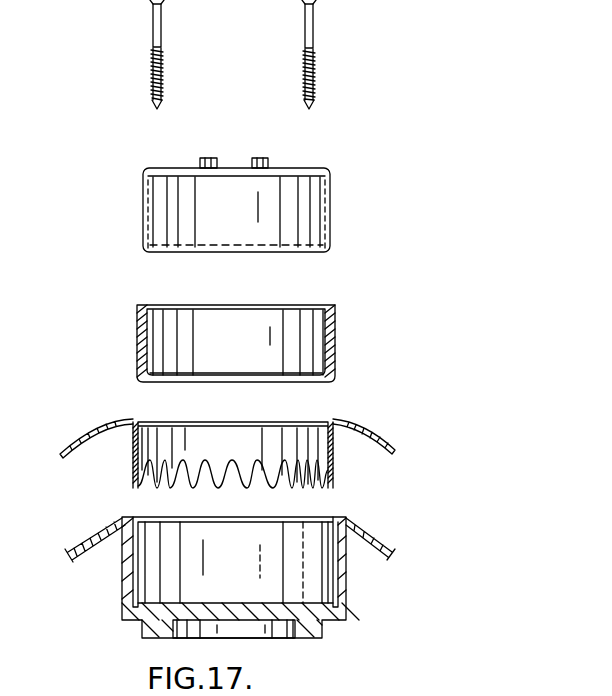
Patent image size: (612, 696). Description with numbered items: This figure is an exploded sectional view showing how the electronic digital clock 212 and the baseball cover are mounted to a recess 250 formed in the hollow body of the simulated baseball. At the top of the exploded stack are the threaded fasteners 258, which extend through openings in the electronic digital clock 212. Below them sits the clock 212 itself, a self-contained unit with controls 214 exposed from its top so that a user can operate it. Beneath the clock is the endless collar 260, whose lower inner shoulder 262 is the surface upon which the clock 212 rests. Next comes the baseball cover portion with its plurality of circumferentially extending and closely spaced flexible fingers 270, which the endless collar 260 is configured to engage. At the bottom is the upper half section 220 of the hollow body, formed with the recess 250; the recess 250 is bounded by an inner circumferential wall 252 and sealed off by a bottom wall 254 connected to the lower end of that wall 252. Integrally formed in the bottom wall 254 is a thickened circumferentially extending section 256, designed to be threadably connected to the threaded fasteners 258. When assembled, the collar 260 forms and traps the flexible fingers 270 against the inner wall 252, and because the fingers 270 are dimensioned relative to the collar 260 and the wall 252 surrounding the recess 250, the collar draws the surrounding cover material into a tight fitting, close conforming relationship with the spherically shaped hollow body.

The electronic digital clock 212 is at (291, 202).
The controls 214 is at (268, 151).
The upper half section 220 is at (120, 533).
The recess 250 is at (222, 579).
The inner circumferential wall 252 is at (342, 575).
The bottom wall 254 is at (272, 638).
The thickened circumferentially extending section 256 is at (310, 628).
The threaded fasteners 258 is at (315, 28).
The endless collar 260 is at (377, 300).
The lower inner shoulder 262 is at (315, 370).
The flexible fingers 270 is at (248, 476).